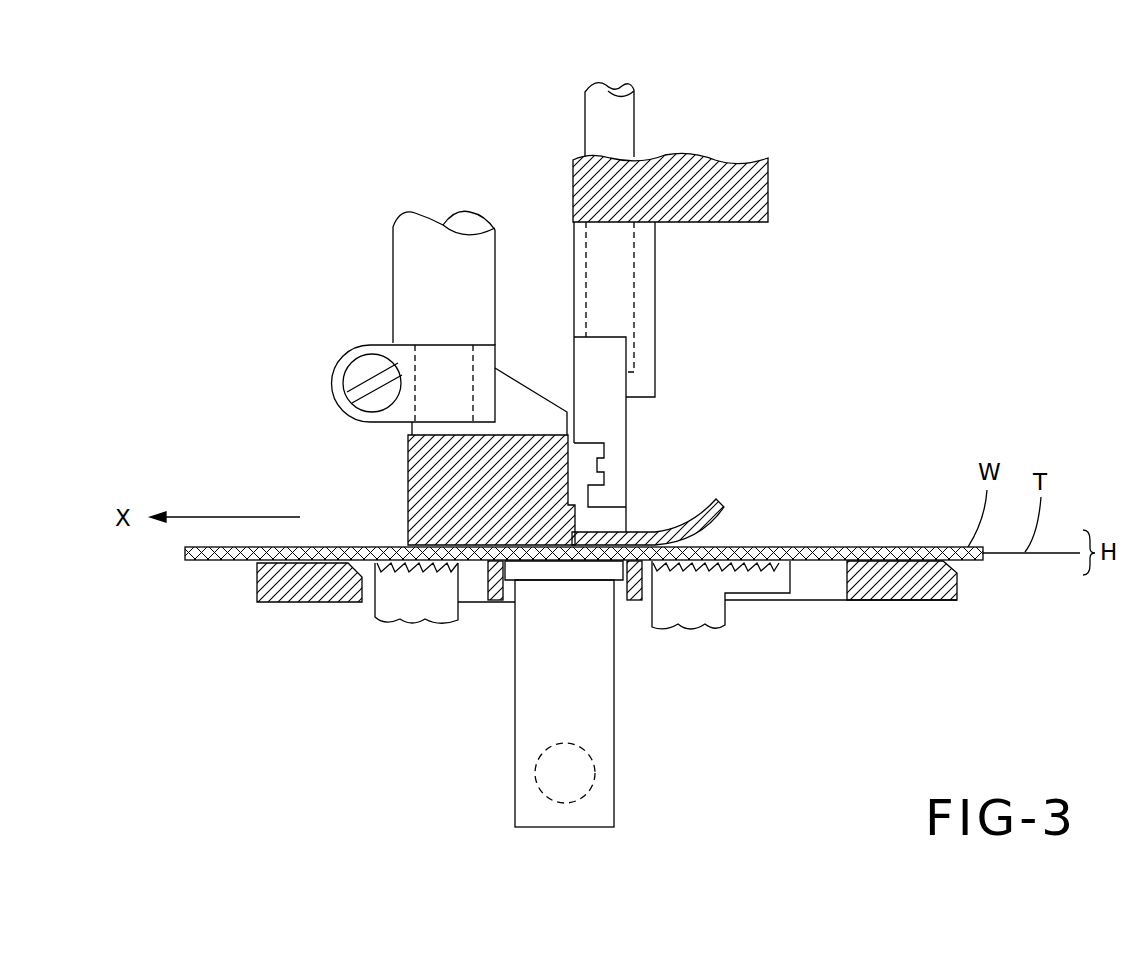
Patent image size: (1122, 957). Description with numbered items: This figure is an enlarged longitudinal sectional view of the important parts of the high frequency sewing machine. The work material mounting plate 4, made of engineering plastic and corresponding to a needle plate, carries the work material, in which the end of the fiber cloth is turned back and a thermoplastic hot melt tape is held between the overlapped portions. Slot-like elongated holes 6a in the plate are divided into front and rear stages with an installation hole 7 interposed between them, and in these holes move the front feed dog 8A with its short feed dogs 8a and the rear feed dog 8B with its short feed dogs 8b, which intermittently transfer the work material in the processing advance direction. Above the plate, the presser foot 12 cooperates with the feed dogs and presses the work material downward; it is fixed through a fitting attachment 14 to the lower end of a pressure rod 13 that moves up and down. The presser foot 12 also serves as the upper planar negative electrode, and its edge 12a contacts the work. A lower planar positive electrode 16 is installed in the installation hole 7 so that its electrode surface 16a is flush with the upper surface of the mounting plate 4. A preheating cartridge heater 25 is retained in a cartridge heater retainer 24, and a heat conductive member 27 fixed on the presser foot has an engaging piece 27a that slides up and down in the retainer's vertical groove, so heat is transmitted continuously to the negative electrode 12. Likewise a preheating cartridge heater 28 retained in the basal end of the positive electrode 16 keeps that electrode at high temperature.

The work material mounting plate 4 is at (943, 590).
The slot-like elongated holes 6a is at (843, 573).
The installation hole 7 is at (617, 600).
The front feed dog 8A is at (683, 626).
The rear feed dog 8B is at (402, 624).
The short feed dogs 8a is at (745, 582).
The short feed dogs 8b is at (390, 593).
The presser foot 12 is at (447, 483).
The cutting edge 12a is at (576, 550).
The pressure rod 13 is at (393, 268).
The fitting attachment 14 is at (370, 345).
The lower planar positive electrode 16 is at (530, 722).
The electrode surface 16a is at (520, 557).
The cartridge heater retainer 24 is at (745, 193).
The preheating cartridge heater 25 is at (635, 115).
The heat conductive member 27 is at (608, 515).
The engaging piece 27a is at (607, 422).
The preheating cartridge heater 28 is at (535, 780).